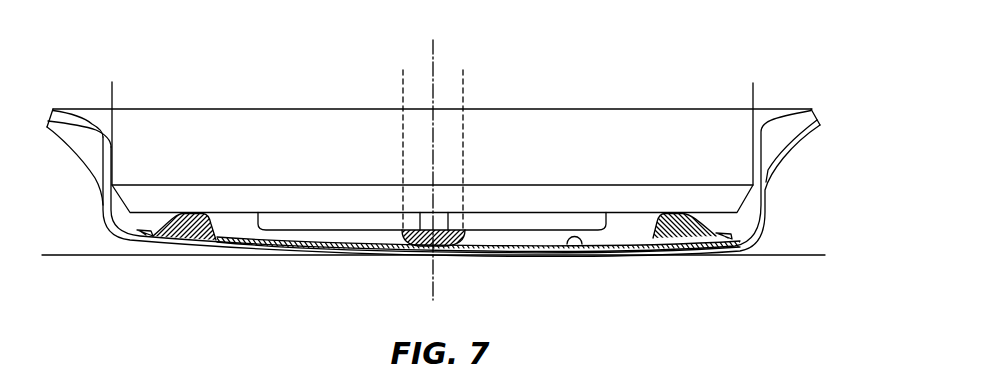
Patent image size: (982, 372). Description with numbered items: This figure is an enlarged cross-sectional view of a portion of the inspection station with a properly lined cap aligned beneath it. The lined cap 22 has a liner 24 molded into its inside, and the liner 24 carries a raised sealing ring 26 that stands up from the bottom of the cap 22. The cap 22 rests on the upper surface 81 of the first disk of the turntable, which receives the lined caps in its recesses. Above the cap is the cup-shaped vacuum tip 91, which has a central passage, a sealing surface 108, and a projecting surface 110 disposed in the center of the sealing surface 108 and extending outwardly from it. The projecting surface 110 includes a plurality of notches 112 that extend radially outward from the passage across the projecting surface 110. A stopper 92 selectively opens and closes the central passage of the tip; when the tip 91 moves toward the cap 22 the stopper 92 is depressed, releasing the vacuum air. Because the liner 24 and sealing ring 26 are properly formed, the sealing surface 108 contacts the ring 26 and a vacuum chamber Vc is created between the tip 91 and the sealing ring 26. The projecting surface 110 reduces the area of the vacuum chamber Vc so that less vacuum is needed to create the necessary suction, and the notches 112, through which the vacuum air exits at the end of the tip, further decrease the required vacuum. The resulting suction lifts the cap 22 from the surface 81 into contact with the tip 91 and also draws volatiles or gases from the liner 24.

The lined cap 22 is at (789, 161).
The liner 24 is at (574, 244).
The raised sealing ring 26 is at (700, 229).
The upper surface 81 is at (63, 255).
The vacuum tip 91 is at (112, 145).
The stopper 92 is at (396, 122).
The sealing surface 108 is at (648, 213).
The projecting surface 110 is at (489, 230).
The notches 112 is at (419, 246).
The vacuum chamber Vc is at (620, 227).